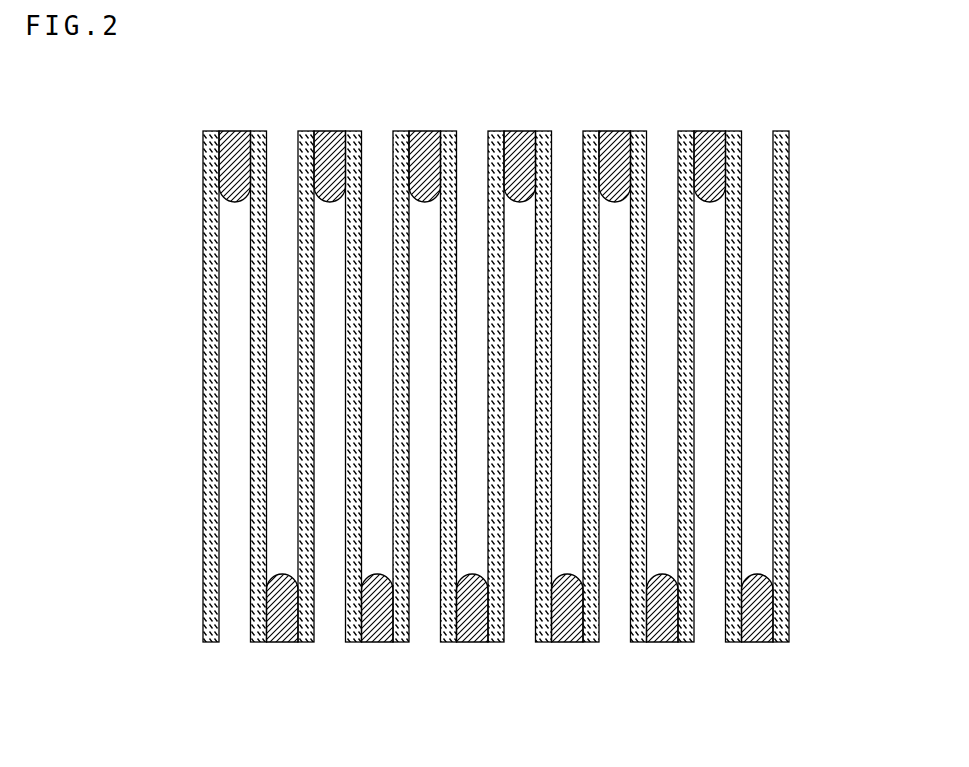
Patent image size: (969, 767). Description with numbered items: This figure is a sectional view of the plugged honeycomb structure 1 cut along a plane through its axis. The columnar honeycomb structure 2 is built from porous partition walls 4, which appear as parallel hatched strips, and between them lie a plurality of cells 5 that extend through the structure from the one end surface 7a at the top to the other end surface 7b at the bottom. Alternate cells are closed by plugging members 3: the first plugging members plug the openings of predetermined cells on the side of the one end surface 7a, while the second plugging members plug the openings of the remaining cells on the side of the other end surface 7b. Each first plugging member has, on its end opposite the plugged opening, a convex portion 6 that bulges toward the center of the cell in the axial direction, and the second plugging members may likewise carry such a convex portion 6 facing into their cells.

The plugged honeycomb structure 1 is at (466, 84).
The honeycomb structure 2 is at (787, 373).
The plugging members 3 is at (708, 142).
The partition walls 4 is at (737, 192).
The cells 5 is at (613, 262).
The convex portion 6 is at (235, 200).
The one end surface 7a is at (243, 103).
The other end surface 7b is at (237, 685).